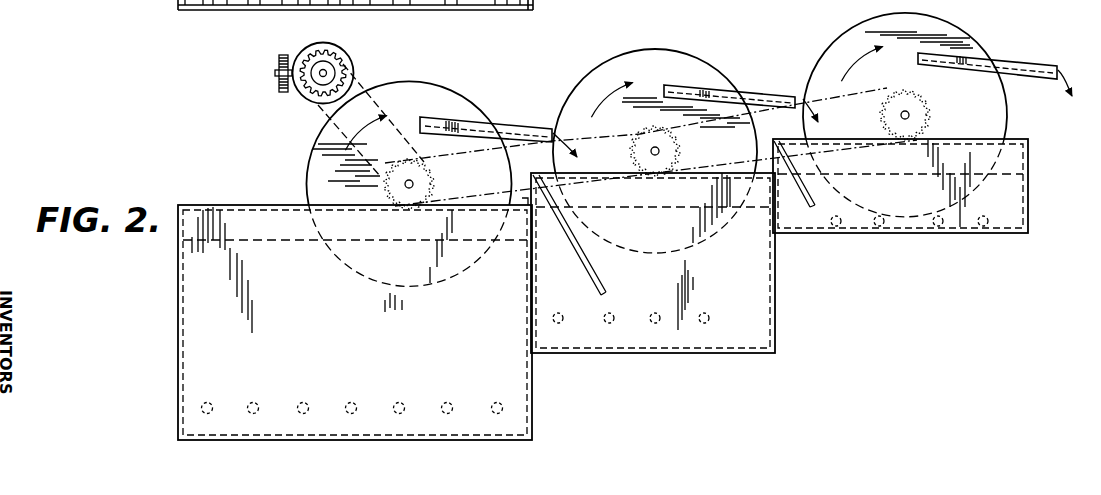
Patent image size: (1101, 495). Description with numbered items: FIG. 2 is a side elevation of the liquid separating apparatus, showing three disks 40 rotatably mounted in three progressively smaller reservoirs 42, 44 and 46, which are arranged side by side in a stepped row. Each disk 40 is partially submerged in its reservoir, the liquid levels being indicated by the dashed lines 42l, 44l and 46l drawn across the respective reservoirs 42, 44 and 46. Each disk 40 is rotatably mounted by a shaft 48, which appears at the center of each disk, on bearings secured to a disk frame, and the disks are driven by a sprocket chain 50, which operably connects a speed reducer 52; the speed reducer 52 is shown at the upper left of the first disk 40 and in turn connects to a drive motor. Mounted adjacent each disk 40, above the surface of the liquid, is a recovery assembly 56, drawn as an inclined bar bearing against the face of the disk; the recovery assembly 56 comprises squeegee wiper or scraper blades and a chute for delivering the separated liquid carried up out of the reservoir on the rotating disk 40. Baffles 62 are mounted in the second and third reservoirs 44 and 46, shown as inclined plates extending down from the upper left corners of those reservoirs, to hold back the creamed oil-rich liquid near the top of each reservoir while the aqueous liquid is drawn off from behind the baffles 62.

The disk 40 is at (316, 156).
The reservoir 42 is at (178, 382).
The liquid level 42l is at (231, 240).
The reservoir 44 is at (776, 338).
The liquid level 44l is at (758, 208).
The reservoir 46 is at (1008, 234).
The liquid level 46l is at (1008, 176).
The shaft 48 is at (414, 184).
The sprocket chain 50 is at (570, 138).
The speed reducer 52 is at (350, 70).
The recovery assembly 56 is at (516, 120).
The baffle 62 is at (588, 255).